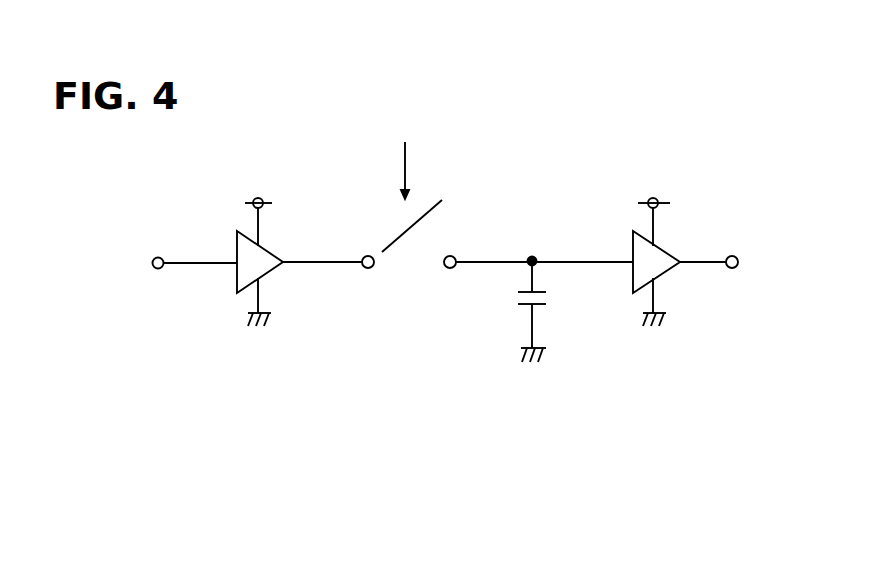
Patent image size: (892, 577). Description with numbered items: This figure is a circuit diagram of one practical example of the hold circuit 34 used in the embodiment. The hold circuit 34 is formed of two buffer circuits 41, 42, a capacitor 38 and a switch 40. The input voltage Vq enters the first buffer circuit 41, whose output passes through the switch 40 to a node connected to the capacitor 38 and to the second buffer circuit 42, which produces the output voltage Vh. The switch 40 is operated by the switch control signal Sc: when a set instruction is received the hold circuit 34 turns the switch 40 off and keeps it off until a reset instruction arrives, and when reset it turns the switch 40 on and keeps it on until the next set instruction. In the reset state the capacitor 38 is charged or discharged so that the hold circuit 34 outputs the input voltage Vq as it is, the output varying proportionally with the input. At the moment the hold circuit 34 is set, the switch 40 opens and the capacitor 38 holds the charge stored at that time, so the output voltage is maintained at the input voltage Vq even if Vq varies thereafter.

The hold circuit 34 is at (361, 392).
The capacitor 38 is at (517, 297).
The switch 40 is at (408, 227).
The buffer circuit 41 is at (240, 290).
The buffer circuit 42 is at (663, 273).